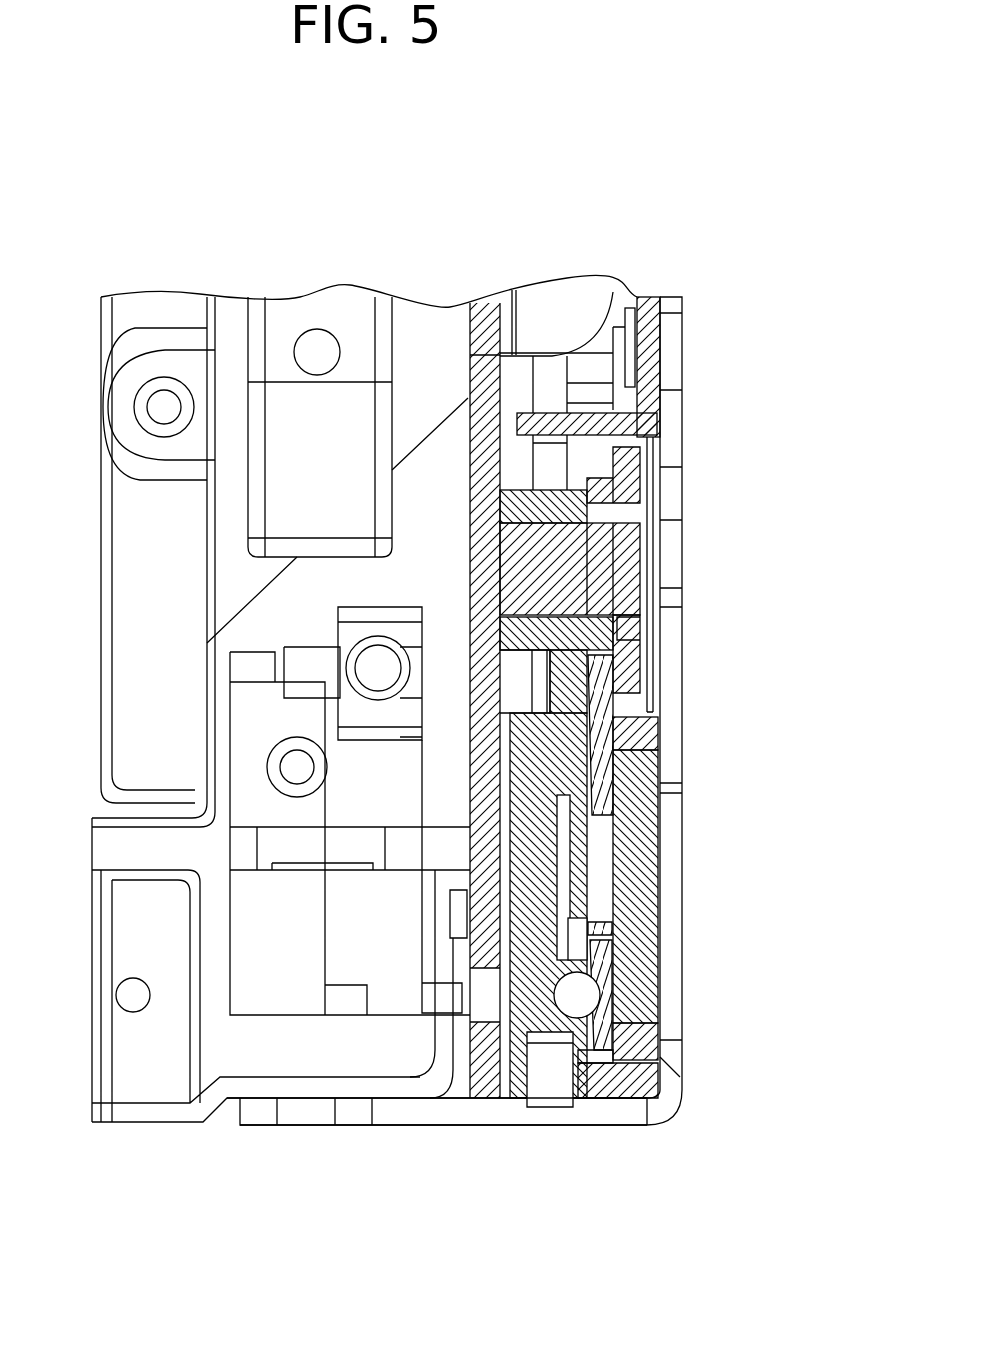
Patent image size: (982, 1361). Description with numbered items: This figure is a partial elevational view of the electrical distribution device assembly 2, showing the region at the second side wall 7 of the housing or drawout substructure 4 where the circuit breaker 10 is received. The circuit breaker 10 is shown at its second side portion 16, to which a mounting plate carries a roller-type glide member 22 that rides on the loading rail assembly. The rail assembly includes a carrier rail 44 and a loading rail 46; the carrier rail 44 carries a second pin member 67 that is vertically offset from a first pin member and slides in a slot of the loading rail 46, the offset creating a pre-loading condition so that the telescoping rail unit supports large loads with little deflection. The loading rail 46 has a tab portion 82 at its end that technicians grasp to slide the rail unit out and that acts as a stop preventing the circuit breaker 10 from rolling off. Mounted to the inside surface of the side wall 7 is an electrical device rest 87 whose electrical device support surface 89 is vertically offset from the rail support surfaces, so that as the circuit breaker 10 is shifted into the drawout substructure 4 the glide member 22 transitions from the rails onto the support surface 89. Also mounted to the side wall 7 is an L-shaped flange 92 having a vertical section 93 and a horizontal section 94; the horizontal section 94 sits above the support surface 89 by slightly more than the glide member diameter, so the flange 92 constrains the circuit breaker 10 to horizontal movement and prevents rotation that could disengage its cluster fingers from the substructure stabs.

The electrical distribution device assembly 2 is at (630, 1235).
The drawout substructure 4 is at (690, 450).
The second side wall 7 is at (682, 320).
The circuit breaker 10 is at (240, 1030).
The second side portion 16 is at (517, 680).
The glide member 22 is at (632, 550).
The carrier rail 44 is at (663, 823).
The loading rail 46 is at (602, 968).
The second pin member 67 is at (608, 912).
The tab portion 82 is at (663, 692).
The electrical device rest 87 is at (520, 768).
The electrical device support surface 89 is at (633, 623).
The L-shaped flange 92 is at (640, 422).
The vertical section 93 is at (635, 295).
The horizontal section 94 is at (552, 423).